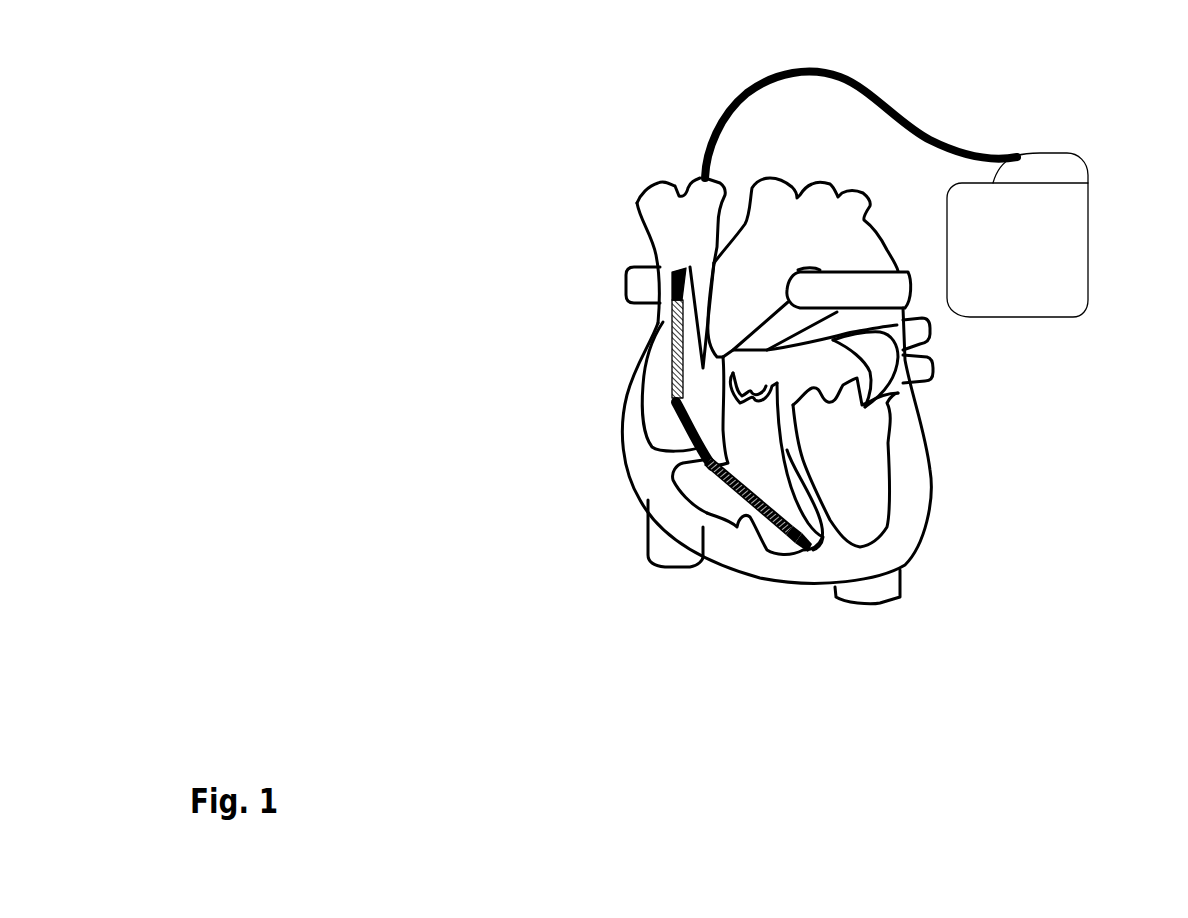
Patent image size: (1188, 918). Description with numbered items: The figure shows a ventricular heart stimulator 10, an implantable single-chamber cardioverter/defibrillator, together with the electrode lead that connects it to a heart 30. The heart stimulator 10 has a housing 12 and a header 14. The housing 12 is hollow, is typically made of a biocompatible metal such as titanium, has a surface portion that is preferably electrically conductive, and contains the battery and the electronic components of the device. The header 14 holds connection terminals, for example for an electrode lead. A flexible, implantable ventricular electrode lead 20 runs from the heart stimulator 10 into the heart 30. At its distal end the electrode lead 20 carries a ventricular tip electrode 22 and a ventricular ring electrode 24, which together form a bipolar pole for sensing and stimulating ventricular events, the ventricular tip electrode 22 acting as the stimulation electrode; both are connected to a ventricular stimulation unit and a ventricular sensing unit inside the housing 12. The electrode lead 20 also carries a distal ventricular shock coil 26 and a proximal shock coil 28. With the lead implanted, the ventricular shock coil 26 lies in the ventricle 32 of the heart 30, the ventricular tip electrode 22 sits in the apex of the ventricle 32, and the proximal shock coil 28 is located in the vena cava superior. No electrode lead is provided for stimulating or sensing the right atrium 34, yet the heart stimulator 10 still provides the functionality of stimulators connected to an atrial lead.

The ventricular heart stimulator 10 is at (1058, 283).
The housing 12 is at (1067, 215).
The header 14 is at (1042, 163).
The electrode lead 20 is at (750, 95).
The ventricular tip electrode 22 is at (808, 552).
The ventricular ring electrode 24 is at (792, 542).
The ventricular shock coil 26 is at (757, 505).
The proximal shock coil 28 is at (678, 352).
The heart 30 is at (698, 377).
The ventricle 32 is at (690, 482).
The right atrium 34 is at (655, 427).